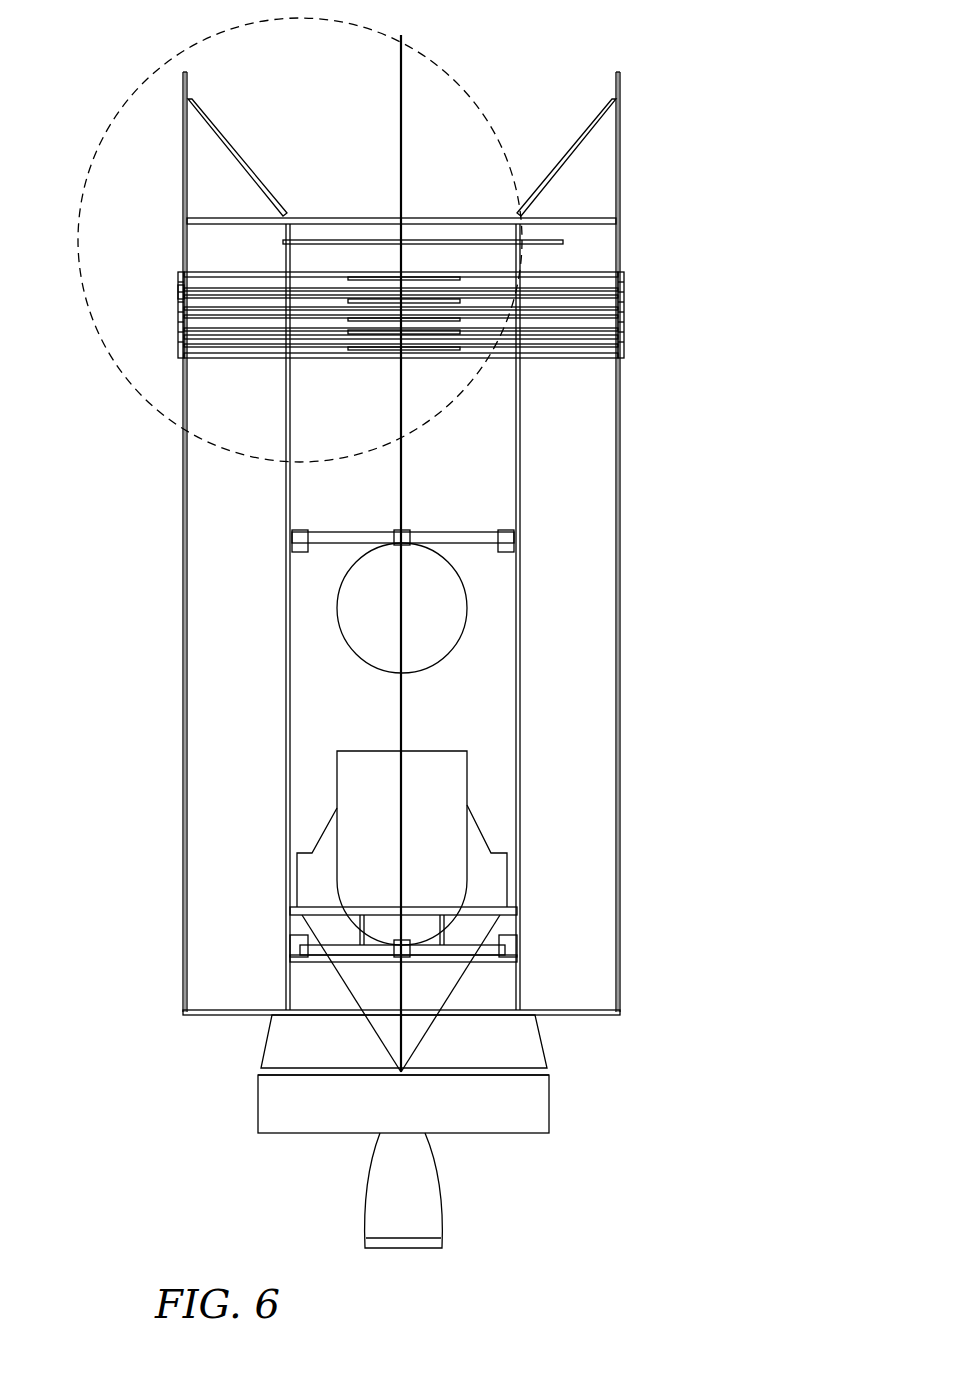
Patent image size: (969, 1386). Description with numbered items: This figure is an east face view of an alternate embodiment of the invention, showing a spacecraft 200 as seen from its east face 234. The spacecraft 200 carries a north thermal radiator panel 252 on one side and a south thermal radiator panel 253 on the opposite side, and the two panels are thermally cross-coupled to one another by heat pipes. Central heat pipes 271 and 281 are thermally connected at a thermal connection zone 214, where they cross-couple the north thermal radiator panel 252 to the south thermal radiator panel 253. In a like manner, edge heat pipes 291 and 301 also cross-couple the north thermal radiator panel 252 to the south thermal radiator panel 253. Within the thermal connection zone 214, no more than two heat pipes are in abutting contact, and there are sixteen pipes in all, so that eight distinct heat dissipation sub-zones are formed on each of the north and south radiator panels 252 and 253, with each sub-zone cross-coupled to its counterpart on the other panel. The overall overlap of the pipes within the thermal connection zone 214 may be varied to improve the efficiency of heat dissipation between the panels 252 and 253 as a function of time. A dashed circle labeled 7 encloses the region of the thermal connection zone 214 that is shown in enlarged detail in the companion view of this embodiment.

The detail view circle (FIG. 7) 7 is at (437, 67).
The spacecraft 200 is at (647, 128).
The thermal connection zone 214 is at (382, 368).
The east face 234 is at (585, 832).
The north thermal radiator panel 252 is at (182, 528).
The south thermal radiator panel 253 is at (622, 538).
The central heat pipe 271 is at (223, 271).
The central heat pipe 281 is at (582, 273).
The edge heat pipe 291 is at (197, 287).
The edge heat pipe 301 is at (600, 292).